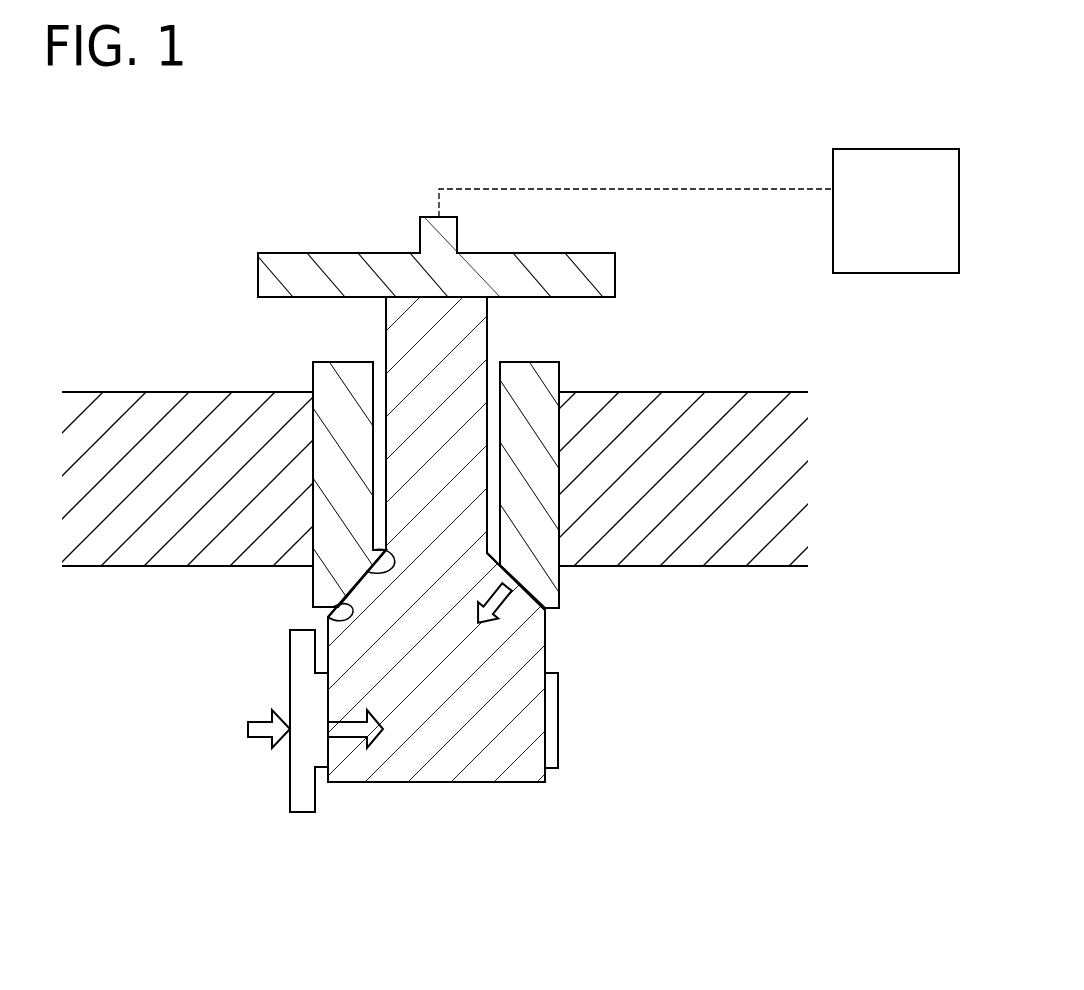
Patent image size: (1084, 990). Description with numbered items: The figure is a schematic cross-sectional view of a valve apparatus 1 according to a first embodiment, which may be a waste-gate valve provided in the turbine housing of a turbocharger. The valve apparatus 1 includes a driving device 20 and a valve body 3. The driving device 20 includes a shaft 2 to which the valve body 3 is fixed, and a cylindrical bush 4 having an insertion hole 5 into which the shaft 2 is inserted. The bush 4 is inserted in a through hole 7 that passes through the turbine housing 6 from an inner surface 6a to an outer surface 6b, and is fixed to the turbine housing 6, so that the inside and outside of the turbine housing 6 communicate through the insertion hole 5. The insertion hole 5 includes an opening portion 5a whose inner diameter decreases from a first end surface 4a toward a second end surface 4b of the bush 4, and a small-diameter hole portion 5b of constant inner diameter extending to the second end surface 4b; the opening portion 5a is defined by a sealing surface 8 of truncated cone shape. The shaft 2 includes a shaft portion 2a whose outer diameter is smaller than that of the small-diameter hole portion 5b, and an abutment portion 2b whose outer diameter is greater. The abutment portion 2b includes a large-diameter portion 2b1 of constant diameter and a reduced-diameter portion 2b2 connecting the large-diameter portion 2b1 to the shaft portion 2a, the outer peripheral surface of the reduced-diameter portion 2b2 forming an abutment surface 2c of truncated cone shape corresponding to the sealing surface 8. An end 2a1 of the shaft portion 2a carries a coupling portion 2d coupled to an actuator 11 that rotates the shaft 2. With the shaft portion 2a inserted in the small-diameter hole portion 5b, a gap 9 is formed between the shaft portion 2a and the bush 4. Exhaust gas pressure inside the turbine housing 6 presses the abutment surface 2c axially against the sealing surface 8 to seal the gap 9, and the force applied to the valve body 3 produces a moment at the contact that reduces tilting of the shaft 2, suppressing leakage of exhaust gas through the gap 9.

The valve apparatus 1 is at (137, 190).
The driving device 20 is at (510, 507).
The shaft 2 is at (548, 523).
The shaft portion 2a is at (462, 538).
The end of the shaft portion 2a1 is at (412, 294).
The abutment portion 2b is at (530, 659).
The large-diameter portion 2b1 is at (545, 758).
The reduced-diameter portion 2b2 is at (495, 578).
The abutment surface 2c is at (540, 607).
The coupling portion 2d is at (615, 272).
The valve body 3 is at (300, 812).
The bush 4 is at (572, 483).
The first end surface 4a is at (530, 590).
The second end surface 4b is at (546, 362).
The insertion hole 5 is at (280, 492).
The opening portion 5a is at (330, 616).
The small-diameter hole portion 5b is at (365, 570).
The turbine housing 6 is at (435, 481).
The inner surface 6a is at (113, 567).
The outer surface 6b is at (110, 392).
The through hole 7 is at (317, 398).
The sealing surface 8 is at (495, 578).
The gap 9 is at (490, 438).
The actuator 11 is at (893, 274).